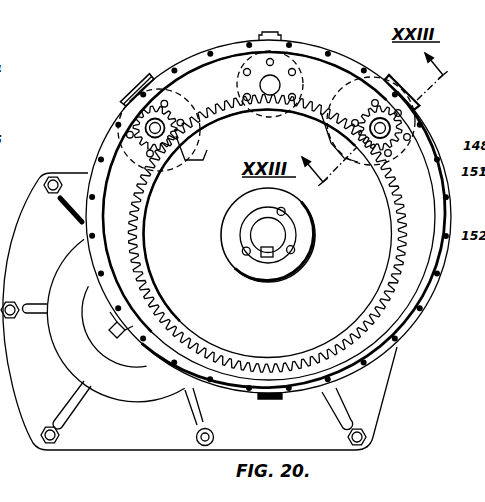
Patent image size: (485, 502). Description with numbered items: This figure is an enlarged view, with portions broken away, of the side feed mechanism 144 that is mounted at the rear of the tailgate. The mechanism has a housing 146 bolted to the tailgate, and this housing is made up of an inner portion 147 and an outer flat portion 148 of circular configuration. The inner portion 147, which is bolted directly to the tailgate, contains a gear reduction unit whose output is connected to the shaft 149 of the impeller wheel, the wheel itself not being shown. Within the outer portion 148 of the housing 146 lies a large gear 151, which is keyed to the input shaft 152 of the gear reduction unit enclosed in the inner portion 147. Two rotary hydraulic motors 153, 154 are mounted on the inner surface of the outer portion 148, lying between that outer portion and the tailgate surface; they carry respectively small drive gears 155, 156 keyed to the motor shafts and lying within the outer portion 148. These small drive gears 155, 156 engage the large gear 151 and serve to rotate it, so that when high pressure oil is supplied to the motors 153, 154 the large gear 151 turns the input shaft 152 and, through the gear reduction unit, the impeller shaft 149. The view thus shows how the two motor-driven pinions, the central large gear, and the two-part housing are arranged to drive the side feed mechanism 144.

The side feed mechanism 144 is at (326, 43).
The housing 146 is at (406, 346).
The inner portion 147 is at (123, 442).
The outer flat portion 148 is at (405, 310).
The shaft 149 is at (110, 313).
The large gear 151 is at (345, 347).
The input shaft 152 is at (284, 235).
The rotary hydraulic motor 153 is at (134, 91).
The rotary hydraulic motor 154 is at (418, 101).
The small drive gear 155 is at (150, 142).
The small drive gear 156 is at (392, 143).